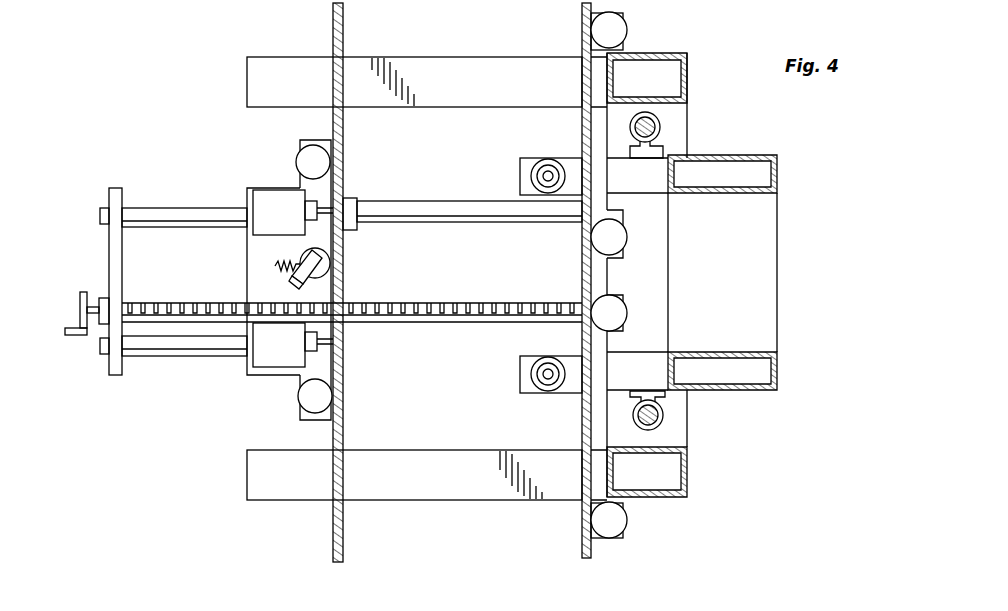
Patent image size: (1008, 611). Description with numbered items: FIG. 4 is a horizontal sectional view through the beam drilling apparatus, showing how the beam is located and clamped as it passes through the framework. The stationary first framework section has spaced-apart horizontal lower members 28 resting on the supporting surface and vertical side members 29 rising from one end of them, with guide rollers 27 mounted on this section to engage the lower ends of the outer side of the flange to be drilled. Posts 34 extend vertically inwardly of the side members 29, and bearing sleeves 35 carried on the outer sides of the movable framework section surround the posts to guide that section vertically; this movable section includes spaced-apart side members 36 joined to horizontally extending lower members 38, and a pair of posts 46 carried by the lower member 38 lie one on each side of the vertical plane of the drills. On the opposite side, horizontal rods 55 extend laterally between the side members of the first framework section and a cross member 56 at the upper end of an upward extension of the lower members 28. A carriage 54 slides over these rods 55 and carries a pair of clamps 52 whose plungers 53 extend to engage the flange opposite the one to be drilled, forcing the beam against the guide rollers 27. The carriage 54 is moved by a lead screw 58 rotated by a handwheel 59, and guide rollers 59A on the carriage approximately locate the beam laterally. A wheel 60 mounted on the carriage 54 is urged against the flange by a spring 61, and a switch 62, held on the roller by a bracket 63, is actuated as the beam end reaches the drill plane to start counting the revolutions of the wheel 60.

The guide rollers 27 is at (624, 242).
The lower members 28 is at (455, 62).
The side members 29 is at (690, 66).
The posts 34 is at (668, 414).
The bearing sleeves 35 is at (660, 122).
The side members 36 is at (740, 155).
The lower members 38 is at (530, 395).
The posts 46 is at (540, 162).
The clamps 52 is at (274, 190).
The plungers 53 is at (325, 338).
The carriage 54 is at (248, 284).
The horizontal rods 55 is at (200, 208).
The cross member 56 is at (118, 188).
The lead screw 58 is at (452, 302).
The handwheel 59 is at (88, 294).
The guide rollers 59A is at (298, 397).
The wheel 60 is at (328, 250).
The spring 61 is at (275, 266).
The switch 62 is at (330, 286).
The bracket 63 is at (340, 268).